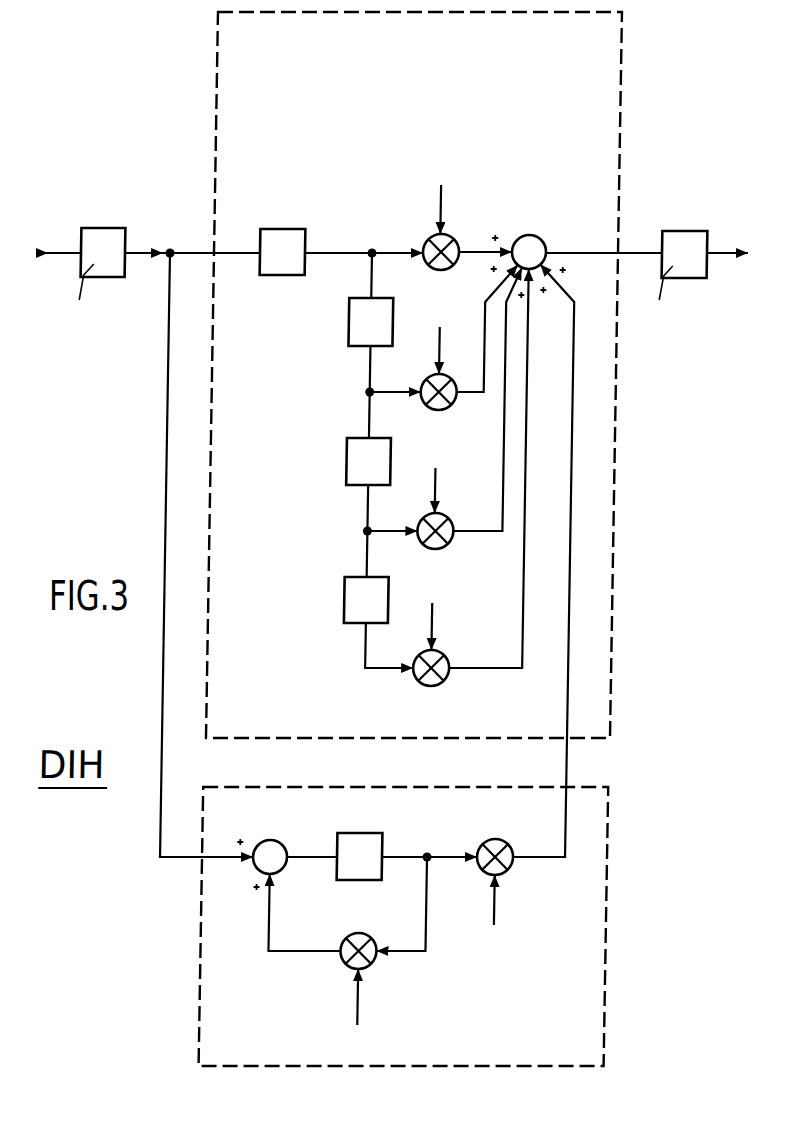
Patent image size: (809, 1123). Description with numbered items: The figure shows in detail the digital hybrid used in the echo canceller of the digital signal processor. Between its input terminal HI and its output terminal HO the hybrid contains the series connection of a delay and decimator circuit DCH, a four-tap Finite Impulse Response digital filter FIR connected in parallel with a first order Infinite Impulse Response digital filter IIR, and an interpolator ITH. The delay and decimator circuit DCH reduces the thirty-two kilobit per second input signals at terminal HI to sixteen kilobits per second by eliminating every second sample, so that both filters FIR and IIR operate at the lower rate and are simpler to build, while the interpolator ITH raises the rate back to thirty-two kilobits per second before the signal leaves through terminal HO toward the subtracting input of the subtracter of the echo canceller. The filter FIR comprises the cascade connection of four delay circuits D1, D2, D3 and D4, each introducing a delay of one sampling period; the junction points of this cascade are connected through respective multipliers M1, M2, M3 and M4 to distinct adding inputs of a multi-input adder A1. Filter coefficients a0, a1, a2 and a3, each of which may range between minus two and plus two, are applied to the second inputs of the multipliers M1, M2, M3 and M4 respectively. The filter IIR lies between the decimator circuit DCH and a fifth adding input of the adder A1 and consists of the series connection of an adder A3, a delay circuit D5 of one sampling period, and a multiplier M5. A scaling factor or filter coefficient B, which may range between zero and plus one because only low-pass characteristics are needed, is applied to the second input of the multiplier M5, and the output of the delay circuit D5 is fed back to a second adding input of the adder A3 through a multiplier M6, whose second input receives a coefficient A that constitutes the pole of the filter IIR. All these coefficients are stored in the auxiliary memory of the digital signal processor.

The input terminal HI is at (58, 238).
The delay and decimator circuit DCH is at (101, 272).
The delay circuit D1 is at (294, 239).
The delay circuit D2 is at (354, 333).
The delay circuit D3 is at (351, 475).
The delay circuit D4 is at (347, 614).
The delay circuit D5 is at (370, 844).
The multiplier M1 is at (452, 238).
The multiplier M2 is at (449, 400).
The multiplier M3 is at (446, 540).
The multiplier M4 is at (441, 680).
The multiplier M5 is at (504, 840).
The multiplier M6 is at (368, 937).
The multi-input adder A1 is at (540, 236).
The adder A3 is at (280, 841).
The filter coefficient a0 is at (440, 197).
The filter coefficient a1 is at (434, 337).
The filter coefficient a2 is at (429, 477).
The filter coefficient a3 is at (424, 613).
The coefficient A is at (359, 1010).
The scaling factor B is at (493, 915).
The interpolator ITH is at (687, 267).
The output terminal HO is at (733, 241).
The Finite Impulse Response digital filter FIR is at (435, 375).
The Infinite Impulse Response digital filter IIR is at (424, 926).